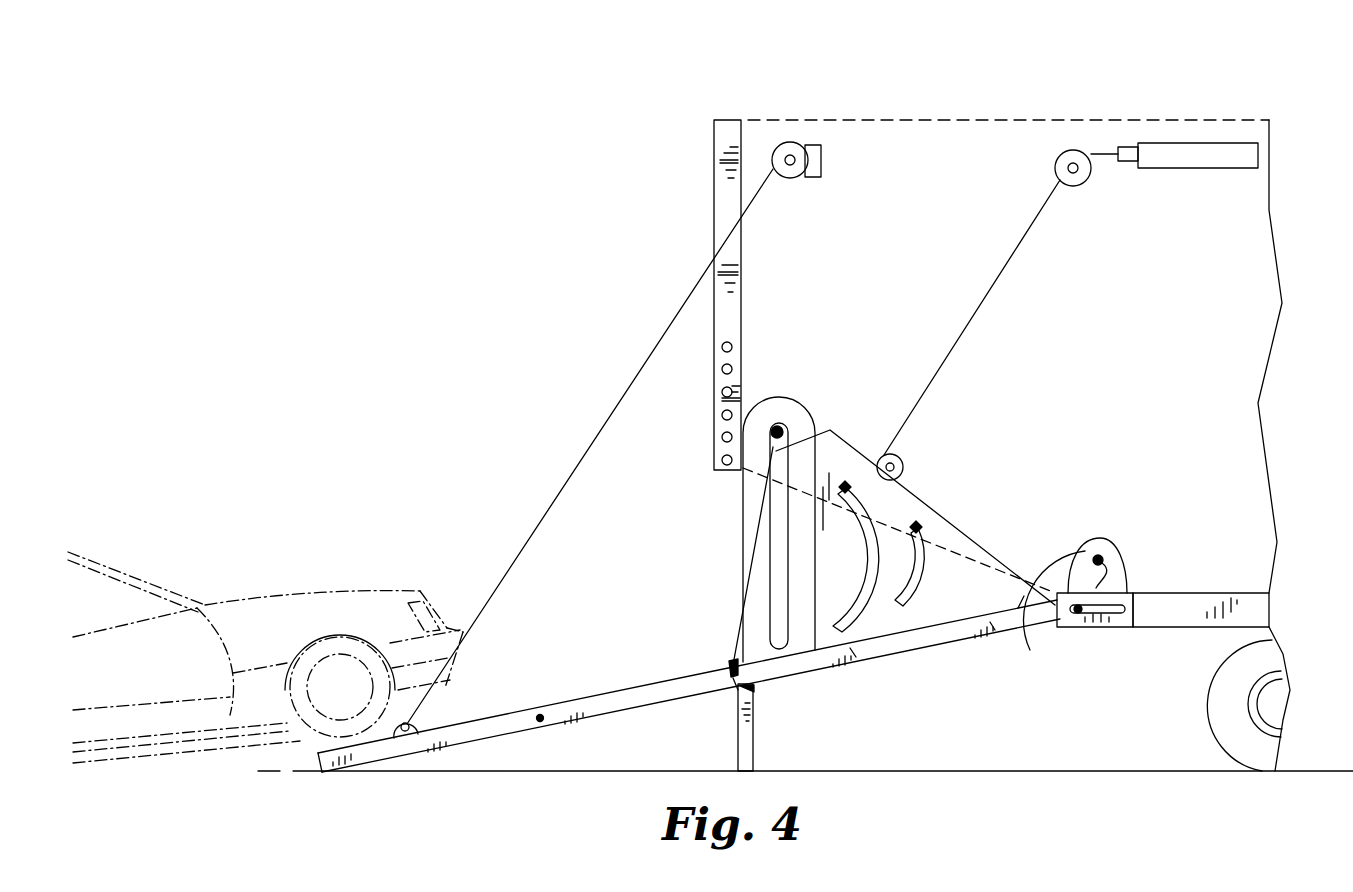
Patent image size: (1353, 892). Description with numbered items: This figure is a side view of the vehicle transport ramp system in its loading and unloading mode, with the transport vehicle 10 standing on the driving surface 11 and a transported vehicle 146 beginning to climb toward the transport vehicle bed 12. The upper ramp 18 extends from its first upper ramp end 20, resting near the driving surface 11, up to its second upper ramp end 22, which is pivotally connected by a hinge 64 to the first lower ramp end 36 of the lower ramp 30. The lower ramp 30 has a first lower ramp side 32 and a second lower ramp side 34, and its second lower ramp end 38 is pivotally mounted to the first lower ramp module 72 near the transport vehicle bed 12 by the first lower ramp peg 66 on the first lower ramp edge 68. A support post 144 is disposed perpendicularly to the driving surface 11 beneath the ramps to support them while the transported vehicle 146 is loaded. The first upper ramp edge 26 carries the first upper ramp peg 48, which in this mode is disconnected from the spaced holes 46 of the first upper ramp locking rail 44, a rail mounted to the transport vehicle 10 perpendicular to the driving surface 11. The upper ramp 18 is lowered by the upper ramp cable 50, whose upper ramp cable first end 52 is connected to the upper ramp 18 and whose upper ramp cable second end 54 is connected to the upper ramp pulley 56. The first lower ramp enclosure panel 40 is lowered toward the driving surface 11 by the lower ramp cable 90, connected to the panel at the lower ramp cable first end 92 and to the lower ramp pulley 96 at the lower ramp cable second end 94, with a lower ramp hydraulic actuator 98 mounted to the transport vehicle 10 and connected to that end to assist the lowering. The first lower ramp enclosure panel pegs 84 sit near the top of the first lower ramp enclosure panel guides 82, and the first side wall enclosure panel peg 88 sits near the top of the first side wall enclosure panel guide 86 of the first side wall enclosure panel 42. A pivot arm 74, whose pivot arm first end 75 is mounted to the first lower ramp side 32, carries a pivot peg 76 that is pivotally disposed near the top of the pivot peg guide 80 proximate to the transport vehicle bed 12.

The transport vehicle 10 is at (1250, 92).
The driving surface 11 is at (1045, 771).
The transport vehicle bed 12 is at (1236, 593).
The upper ramp 18 is at (665, 710).
The first upper ramp end 20 is at (320, 757).
The second upper ramp end 22 is at (733, 692).
The first upper ramp edge 26 is at (642, 702).
The lower ramp 30 is at (889, 652).
The first lower ramp side 32 is at (948, 640).
The second lower ramp side 34 is at (992, 636).
The first lower ramp end 36 is at (752, 690).
The second lower ramp end 38 is at (1077, 633).
The first lower ramp enclosure panel 40 is at (921, 546).
The first side wall enclosure panel 42 is at (795, 412).
The first upper ramp locking rail 44 is at (698, 295).
The spaced holes 46 is at (722, 460).
The first upper ramp peg 48 is at (543, 722).
The upper ramp cable 50 is at (588, 440).
The upper ramp cable first end 52 is at (410, 723).
The upper ramp cable second end 54 is at (775, 142).
The upper ramp pulley 56 is at (812, 145).
The hinge 64 is at (732, 662).
The first lower ramp peg 66 is at (1078, 615).
The first lower ramp edge 68 is at (853, 660).
The first lower ramp module 72 is at (1115, 615).
The pivot arm 74 is at (1048, 565).
The pivot arm first end 75 is at (1018, 606).
The pivot peg 76 is at (1097, 538).
The pivot peg guide 80 is at (1105, 560).
The first lower ramp enclosure panel guide 82 is at (925, 540).
The first lower ramp enclosure panel peg 84 is at (880, 492).
The first side wall enclosure panel guide 86 is at (792, 445).
The first side wall enclosure panel peg 88 is at (773, 425).
The lower ramp cable 90 is at (1007, 245).
The lower ramp cable first end 92 is at (903, 462).
The lower ramp cable second end 94 is at (1058, 160).
The lower ramp pulley 96 is at (1082, 158).
The lower ramp hydraulic actuator 98 is at (1196, 143).
The support post 144 is at (757, 740).
The transported vehicle 146 is at (268, 592).